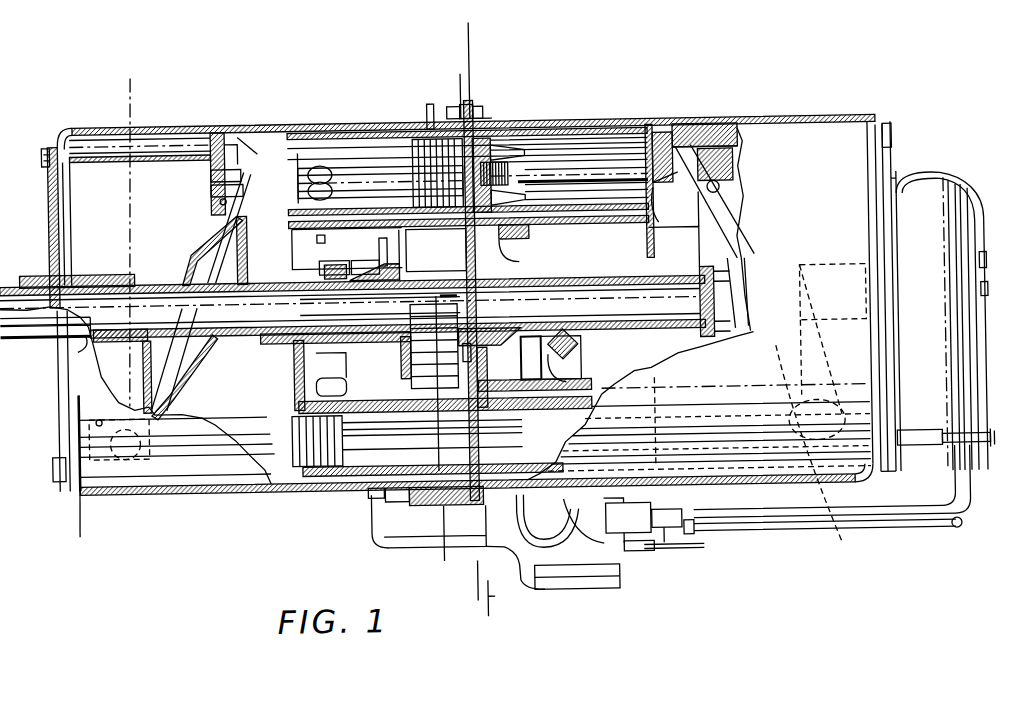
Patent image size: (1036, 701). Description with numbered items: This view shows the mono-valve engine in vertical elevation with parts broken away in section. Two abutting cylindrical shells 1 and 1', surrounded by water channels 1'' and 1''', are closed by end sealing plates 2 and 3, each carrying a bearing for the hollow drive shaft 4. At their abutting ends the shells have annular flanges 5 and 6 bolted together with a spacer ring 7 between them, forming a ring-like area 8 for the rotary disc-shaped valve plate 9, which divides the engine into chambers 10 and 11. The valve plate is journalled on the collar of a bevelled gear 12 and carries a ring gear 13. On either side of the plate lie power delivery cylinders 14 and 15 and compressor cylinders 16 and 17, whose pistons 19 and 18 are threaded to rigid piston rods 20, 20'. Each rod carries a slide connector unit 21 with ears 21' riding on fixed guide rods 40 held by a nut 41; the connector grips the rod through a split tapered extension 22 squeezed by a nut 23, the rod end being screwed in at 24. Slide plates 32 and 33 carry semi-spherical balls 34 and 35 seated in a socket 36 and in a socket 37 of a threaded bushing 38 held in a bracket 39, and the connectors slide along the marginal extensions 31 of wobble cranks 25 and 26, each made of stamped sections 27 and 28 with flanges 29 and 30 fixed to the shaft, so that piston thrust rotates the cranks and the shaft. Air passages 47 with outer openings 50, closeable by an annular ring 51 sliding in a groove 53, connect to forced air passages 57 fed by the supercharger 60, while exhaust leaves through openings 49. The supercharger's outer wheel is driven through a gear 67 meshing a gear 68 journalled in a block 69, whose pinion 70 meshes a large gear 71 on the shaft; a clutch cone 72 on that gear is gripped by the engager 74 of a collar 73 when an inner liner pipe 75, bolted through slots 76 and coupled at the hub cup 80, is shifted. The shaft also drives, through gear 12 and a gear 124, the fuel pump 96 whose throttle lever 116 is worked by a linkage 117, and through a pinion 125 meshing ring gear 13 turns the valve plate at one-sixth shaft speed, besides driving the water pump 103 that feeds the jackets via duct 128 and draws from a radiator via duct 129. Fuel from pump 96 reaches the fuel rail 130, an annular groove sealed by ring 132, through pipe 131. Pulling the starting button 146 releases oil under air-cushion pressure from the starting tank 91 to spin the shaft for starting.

The outer cylindrical casing or shell 1 is at (884, 276).
The outer cylindrical casing or shell 1' is at (55, 114).
The water channel 1'' is at (676, 89).
The water channel 1''' is at (339, 94).
The end sealing plate 2 is at (130, 80).
The end sealing plate 3 is at (415, 556).
The hollow drive shaft 4 is at (470, 45).
The annular flange 5 is at (485, 115).
The annular flange 6 is at (480, 103).
The annular spacer ring 7 is at (478, 98).
The annular area 8 is at (450, 112).
The rotary disc-shaped valve plate 9 is at (522, 500).
The engine chamber 10 is at (440, 305).
The engine chamber 11 is at (240, 384).
The bevelled gear 12 is at (485, 306).
The ring gear 13 is at (512, 255).
The power delivery cylinders 14 is at (670, 125).
The power delivery cylinders 15 is at (312, 150).
The compressor cylinders 16 is at (560, 500).
The compressor cylinders 17 is at (340, 500).
The pistons 18 is at (330, 466).
The pistons 19 is at (535, 118).
The rigid piston rod 20 is at (210, 522).
The piston rod 20' is at (569, 170).
The slide connector unit 21 is at (548, 321).
The ear 21' is at (108, 497).
The offset extension 22 is at (275, 145).
The nut 23 is at (300, 128).
The screwed connection 24 is at (696, 134).
The wobble crank 25 is at (960, 160).
The wobble crank 26 is at (185, 243).
The stamped section 27 is at (140, 333).
The stamped section 28 is at (192, 370).
The flange 29 is at (150, 330).
The flange 30 is at (128, 345).
The marginal extensions 31 is at (222, 200).
The slide plate 32 is at (220, 135).
The slide plate 33 is at (215, 128).
The semi-spherical ball 34 is at (218, 192).
The semi-spherical ball 35 is at (213, 171).
The semi-spherical socket 36 is at (660, 200).
The socket 37 is at (895, 132).
The threaded bushing 38 is at (745, 135).
The bracket 39 is at (743, 122).
The guide rods 40 is at (120, 140).
The nut 41 is at (46, 145).
The air intake passage 47 is at (455, 550).
The exhaust opening 49 is at (482, 108).
The outer port 50 is at (443, 505).
The annular ring 51 is at (382, 498).
The groove 53 is at (430, 112).
The forced air passage 57 is at (372, 498).
The air supercharger 60 is at (379, 250).
The gear 67 is at (410, 286).
The gear 68 is at (420, 330).
The block 69 is at (300, 372).
The pinion gear 70 is at (292, 385).
The large driving gear 71 is at (312, 245).
The clutch cone 72 is at (334, 256).
The collar 73 is at (391, 251).
The tapered shoe 74 is at (363, 255).
The inner liner pipe 75 is at (988, 299).
The slots 76 is at (355, 320).
The hub cup 80 is at (987, 268).
The starting pressure tank 91 is at (952, 192).
The oil pump 96 is at (668, 552).
The water circulating pump 103 is at (520, 585).
The lever 116 is at (622, 542).
The crank and linkage rod device 117 is at (645, 553).
The gear 124 is at (573, 321).
The pinion gear 125 is at (578, 342).
The duct 128 is at (372, 538).
The duct 129 is at (585, 596).
The fuel rail 130 is at (522, 248).
The pipe 131 is at (640, 499).
The annular ring 132 is at (522, 238).
The starting button 146 is at (993, 460).